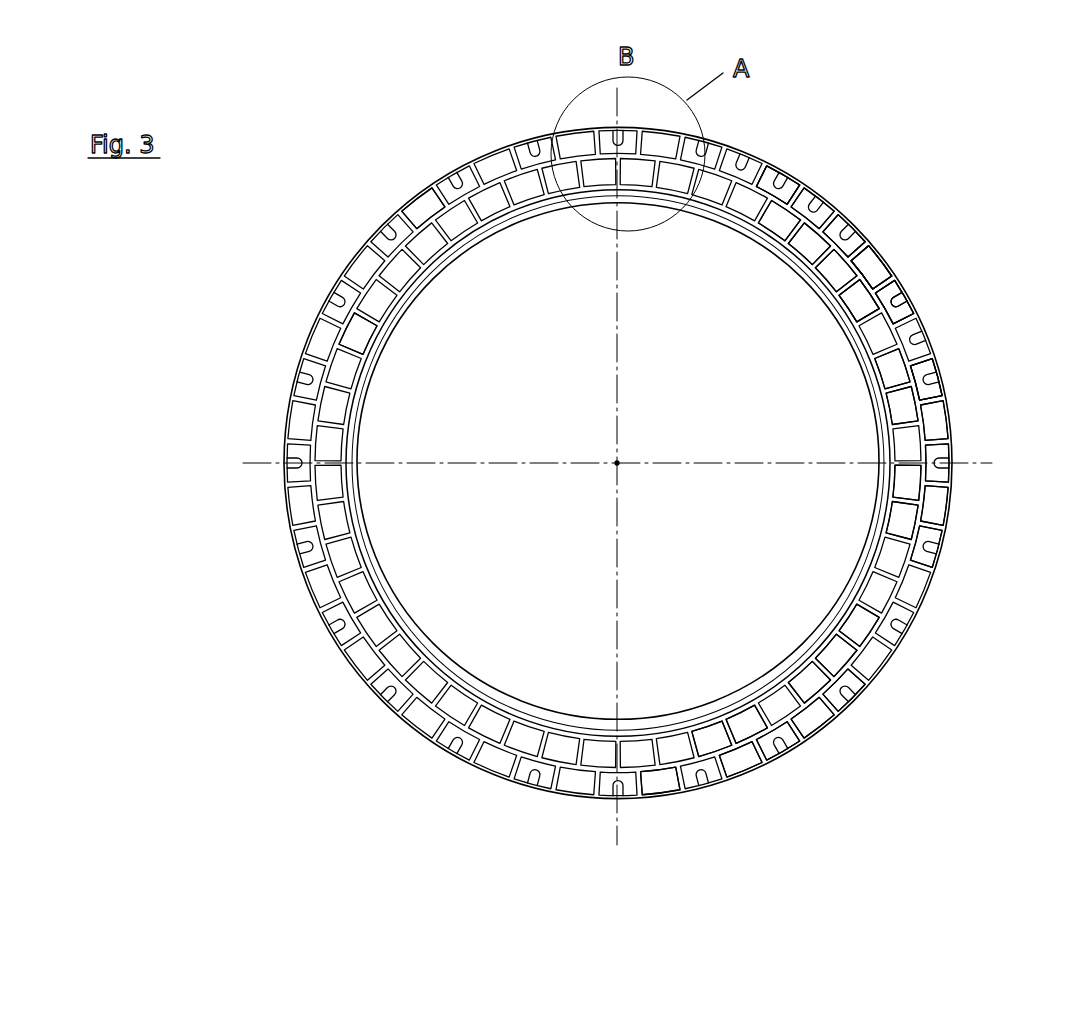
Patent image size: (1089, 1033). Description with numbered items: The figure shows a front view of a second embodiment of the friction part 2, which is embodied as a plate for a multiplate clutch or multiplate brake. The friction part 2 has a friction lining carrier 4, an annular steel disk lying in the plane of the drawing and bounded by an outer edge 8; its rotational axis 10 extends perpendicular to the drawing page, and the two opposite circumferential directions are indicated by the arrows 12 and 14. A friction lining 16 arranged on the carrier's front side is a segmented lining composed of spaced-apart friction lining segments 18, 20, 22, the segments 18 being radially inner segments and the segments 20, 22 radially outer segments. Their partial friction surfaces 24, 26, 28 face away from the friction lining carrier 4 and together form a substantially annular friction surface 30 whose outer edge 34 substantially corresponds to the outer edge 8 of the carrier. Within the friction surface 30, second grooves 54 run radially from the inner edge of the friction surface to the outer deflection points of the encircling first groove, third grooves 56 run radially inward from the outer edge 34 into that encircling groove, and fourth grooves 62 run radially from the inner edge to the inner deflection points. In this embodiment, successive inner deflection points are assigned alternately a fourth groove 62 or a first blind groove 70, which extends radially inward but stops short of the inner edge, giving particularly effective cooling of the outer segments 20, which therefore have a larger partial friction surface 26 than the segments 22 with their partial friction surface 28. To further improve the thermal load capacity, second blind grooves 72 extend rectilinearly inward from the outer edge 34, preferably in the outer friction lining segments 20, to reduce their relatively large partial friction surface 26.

The friction part 2 is at (978, 163).
The friction lining carrier 4 is at (663, 797).
The outer edge 8 is at (882, 267).
The rotational axis 10 is at (618, 464).
The circumferential direction 12 is at (350, 198).
The circumferential direction 14 is at (898, 180).
The friction lining 16 is at (937, 398).
The friction lining segments 18 is at (762, 213).
The outer friction lining segments 20 is at (767, 178).
The outer friction lining segments 22 is at (795, 190).
The partial friction surface 24 is at (897, 382).
The partial friction surface 26 is at (953, 440).
The partial friction surface 28 is at (950, 478).
The annular friction surface 30 is at (921, 471).
The outer edge 34 is at (888, 272).
The second grooves 54 is at (853, 625).
The third grooves 56 is at (855, 695).
The fourth grooves 62 is at (830, 642).
The first blind grooves 70 is at (857, 298).
The second blind grooves 72 is at (760, 160).